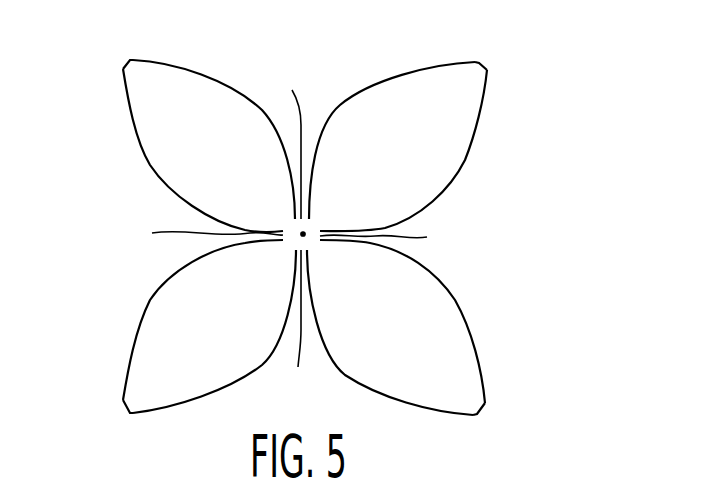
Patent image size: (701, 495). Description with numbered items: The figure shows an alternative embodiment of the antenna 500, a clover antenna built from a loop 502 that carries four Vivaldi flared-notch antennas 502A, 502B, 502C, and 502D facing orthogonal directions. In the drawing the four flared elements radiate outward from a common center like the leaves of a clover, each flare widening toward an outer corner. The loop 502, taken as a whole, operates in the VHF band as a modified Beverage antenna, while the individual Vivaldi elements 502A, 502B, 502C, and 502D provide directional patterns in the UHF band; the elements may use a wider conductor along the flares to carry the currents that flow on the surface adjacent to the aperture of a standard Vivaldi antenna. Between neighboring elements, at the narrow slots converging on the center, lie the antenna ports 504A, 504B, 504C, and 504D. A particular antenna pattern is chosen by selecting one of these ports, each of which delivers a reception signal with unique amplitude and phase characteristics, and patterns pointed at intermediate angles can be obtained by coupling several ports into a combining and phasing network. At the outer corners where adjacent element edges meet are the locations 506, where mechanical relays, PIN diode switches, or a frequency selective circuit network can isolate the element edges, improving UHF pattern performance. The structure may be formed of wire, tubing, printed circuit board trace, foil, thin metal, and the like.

The antenna 500 is at (633, 259).
The loop 502 is at (471, 280).
The Vivaldi flared-notch antenna 502A is at (467, 157).
The Vivaldi flared-notch antenna 502B is at (478, 357).
The Vivaldi flared-notch antenna 502C is at (137, 330).
The Vivaldi flared-notch antenna 502D is at (131, 133).
The antenna port 504A is at (290, 140).
The antenna port 504B is at (398, 239).
The antenna port 504C is at (302, 321).
The antenna port 504D is at (192, 236).
The location between Vivaldi antenna element edges 506 is at (130, 60).